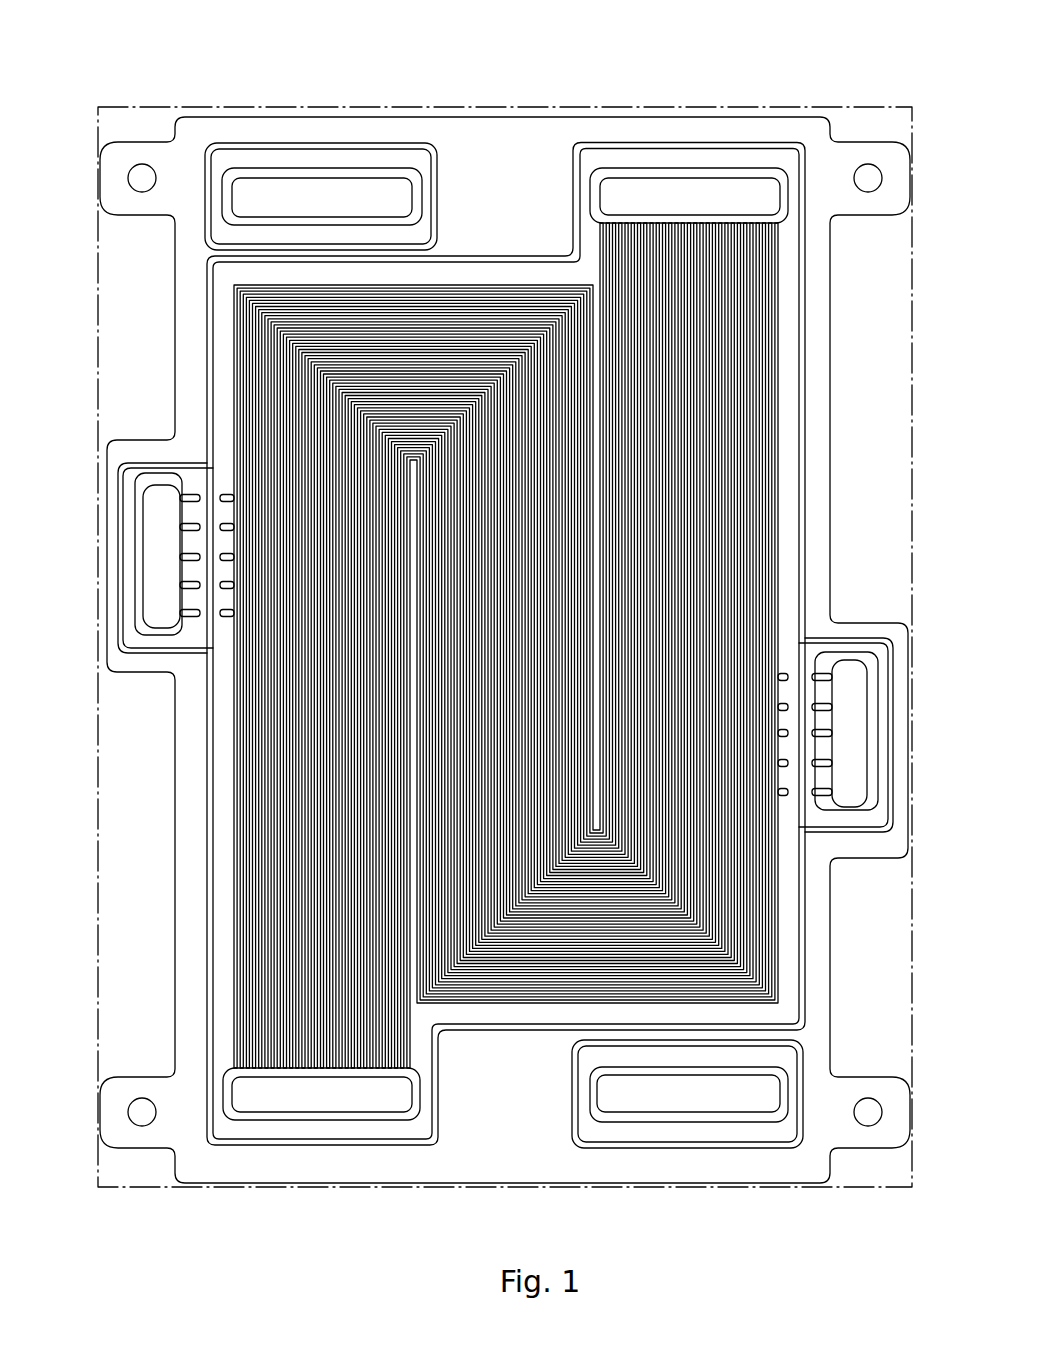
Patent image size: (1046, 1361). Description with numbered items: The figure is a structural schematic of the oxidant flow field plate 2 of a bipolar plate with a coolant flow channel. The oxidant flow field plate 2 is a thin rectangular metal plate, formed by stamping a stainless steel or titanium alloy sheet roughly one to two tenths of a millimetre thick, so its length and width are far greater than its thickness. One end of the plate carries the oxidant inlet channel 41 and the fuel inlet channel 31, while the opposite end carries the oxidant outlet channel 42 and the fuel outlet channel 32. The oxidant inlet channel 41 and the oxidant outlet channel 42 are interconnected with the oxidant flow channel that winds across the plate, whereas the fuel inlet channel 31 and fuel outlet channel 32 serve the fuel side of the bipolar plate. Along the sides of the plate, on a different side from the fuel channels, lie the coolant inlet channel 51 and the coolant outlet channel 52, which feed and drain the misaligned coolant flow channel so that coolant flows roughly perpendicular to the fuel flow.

The oxidant flow field plate 2 is at (497, 163).
The fuel inlet channel 31 is at (335, 197).
The fuel outlet channel 32 is at (698, 1100).
The oxidant inlet channel 41 is at (717, 195).
The oxidant outlet channel 42 is at (288, 1087).
The coolant inlet channel 51 is at (158, 524).
The coolant outlet channel 52 is at (850, 743).